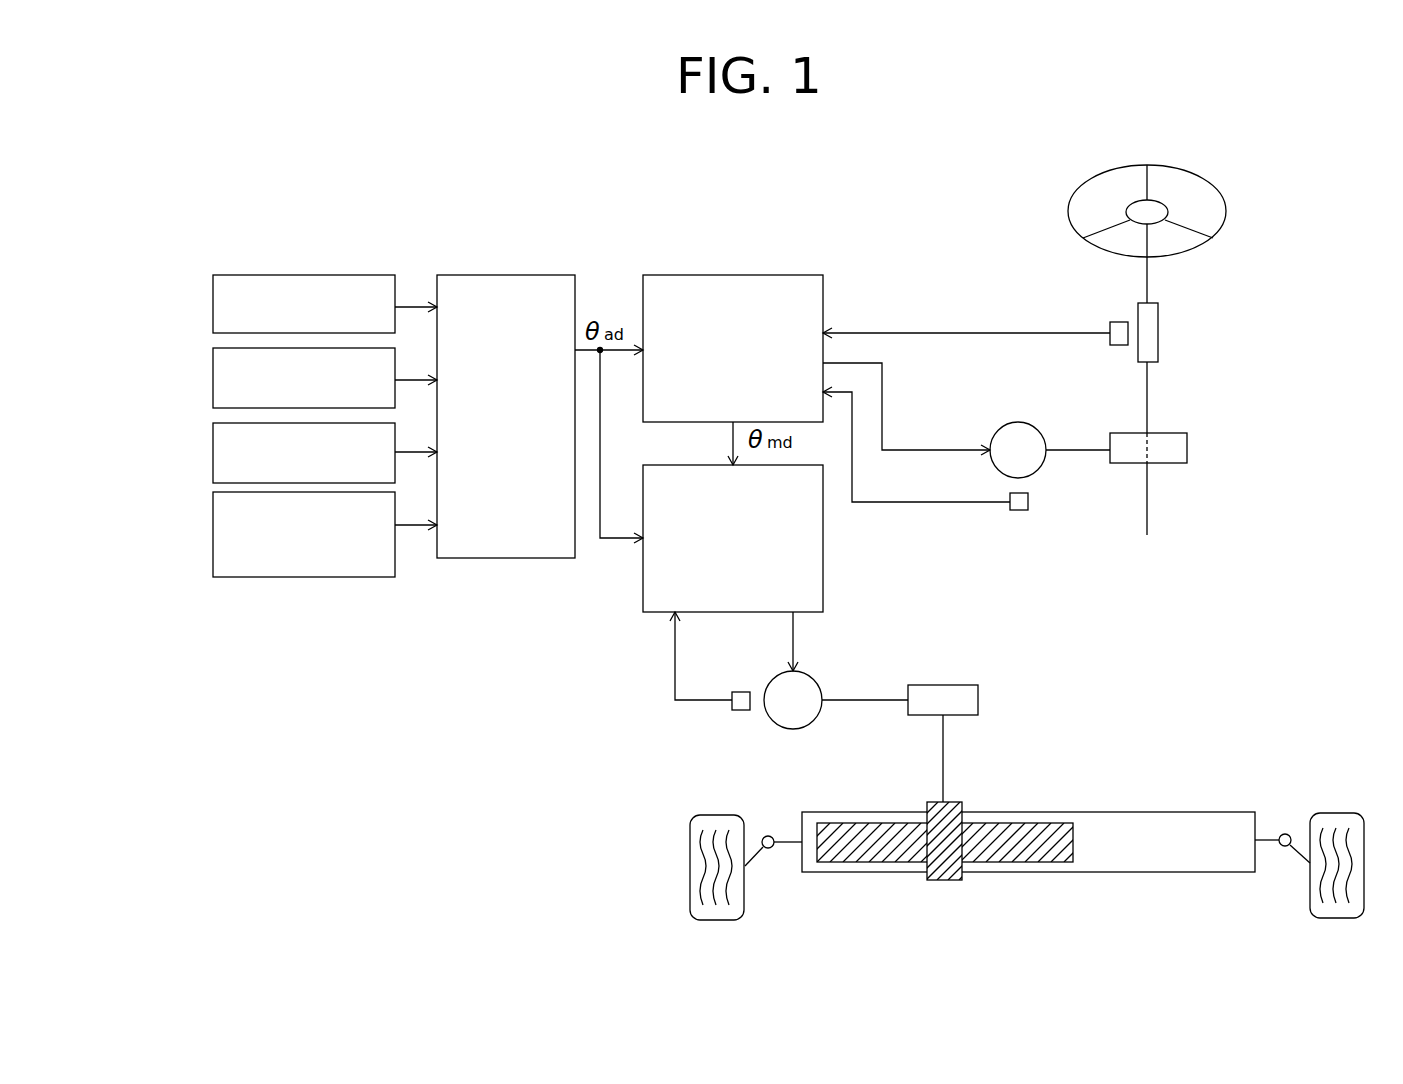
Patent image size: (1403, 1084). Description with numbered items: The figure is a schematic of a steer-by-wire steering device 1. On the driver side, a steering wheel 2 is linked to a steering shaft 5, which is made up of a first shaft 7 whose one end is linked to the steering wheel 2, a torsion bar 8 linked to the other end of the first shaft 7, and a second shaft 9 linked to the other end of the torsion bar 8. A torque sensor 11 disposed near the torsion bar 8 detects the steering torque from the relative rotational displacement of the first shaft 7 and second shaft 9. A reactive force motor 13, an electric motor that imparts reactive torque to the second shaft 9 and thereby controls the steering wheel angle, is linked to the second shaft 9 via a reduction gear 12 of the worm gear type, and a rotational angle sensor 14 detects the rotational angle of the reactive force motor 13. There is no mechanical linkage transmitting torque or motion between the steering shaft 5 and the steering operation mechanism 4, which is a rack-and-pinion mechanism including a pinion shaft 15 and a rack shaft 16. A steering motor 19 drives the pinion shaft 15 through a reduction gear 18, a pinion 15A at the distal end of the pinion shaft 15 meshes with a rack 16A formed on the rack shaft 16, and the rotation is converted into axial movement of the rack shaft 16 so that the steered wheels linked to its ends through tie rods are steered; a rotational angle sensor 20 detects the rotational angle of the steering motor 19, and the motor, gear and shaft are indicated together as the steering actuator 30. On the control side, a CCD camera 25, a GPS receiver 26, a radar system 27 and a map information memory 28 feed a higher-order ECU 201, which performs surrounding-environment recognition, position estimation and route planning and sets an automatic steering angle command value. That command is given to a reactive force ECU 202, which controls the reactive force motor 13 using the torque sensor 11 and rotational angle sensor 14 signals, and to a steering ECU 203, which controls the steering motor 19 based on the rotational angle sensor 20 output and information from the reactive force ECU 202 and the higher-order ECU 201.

The steering device 1 is at (992, 195).
The steering wheel 2 is at (1225, 190).
The steering operation mechanism 4 is at (1118, 787).
The steering shaft 5 is at (1204, 379).
The first shaft 7 is at (1147, 278).
The torsion bar 8 is at (1158, 330).
The second shaft 9 is at (1185, 397).
The torque sensor 11 is at (1120, 322).
The reduction gear 12 is at (1187, 448).
The reactive force motor 13 is at (1018, 422).
The rotational angle sensor 14 is at (1028, 501).
The pinion shaft 15 is at (943, 748).
The pinion 15A is at (943, 880).
The rack shaft 16 is at (1122, 872).
The rack 16A is at (860, 872).
The reduction gear 18 is at (978, 700).
The steering motor 19 is at (793, 729).
The rotational angle sensor 20 is at (739, 692).
The CCD camera 25 is at (213, 306).
The GPS receiver 26 is at (213, 379).
The radar system 27 is at (213, 453).
The map information memory 28 is at (213, 526).
The steering actuator 30 is at (866, 722).
The higher-order ECU 201 is at (503, 275).
The reactive force ECU 202 is at (760, 275).
The steering ECU 203 is at (823, 561).